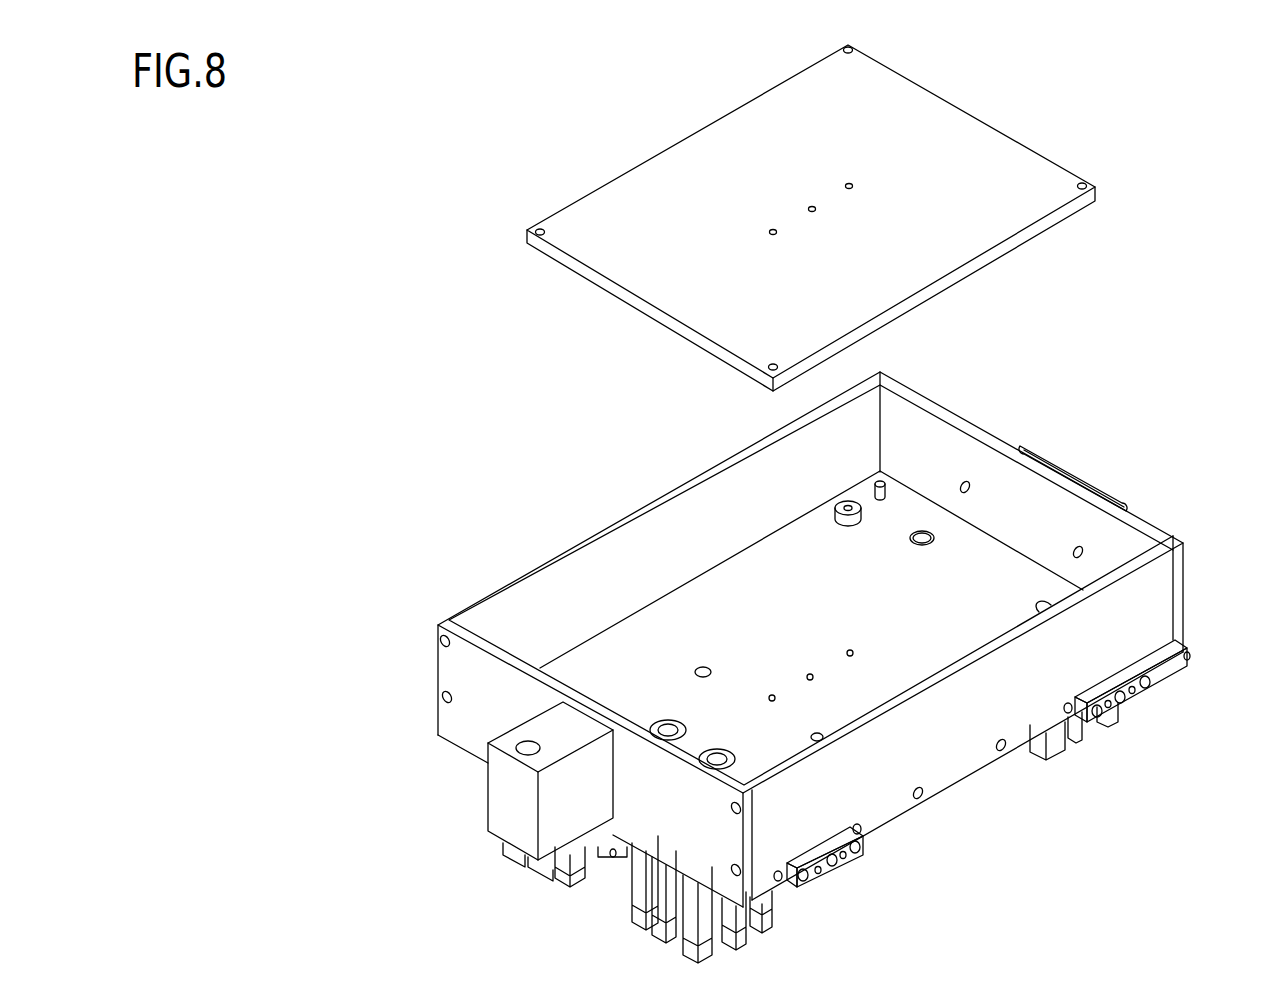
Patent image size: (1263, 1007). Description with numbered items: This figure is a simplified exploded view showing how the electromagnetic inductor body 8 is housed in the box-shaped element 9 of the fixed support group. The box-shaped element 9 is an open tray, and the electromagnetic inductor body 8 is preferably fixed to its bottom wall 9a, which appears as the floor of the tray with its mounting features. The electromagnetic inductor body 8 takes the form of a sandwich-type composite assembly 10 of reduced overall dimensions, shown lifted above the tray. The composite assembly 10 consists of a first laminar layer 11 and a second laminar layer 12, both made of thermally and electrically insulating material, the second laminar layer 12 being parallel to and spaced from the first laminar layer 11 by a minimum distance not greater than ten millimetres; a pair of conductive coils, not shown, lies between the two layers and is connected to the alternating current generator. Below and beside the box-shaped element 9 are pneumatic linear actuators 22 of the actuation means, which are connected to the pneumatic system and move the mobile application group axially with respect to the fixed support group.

The electromagnetic inductor body 8 is at (648, 100).
The box-shaped element 9 is at (1160, 592).
The bottom wall 9a is at (678, 599).
The composite assembly 10 is at (1006, 116).
The first laminar layer 11 is at (938, 293).
The second laminar layer 12 is at (598, 183).
The pneumatic linear actuators 22 is at (660, 897).